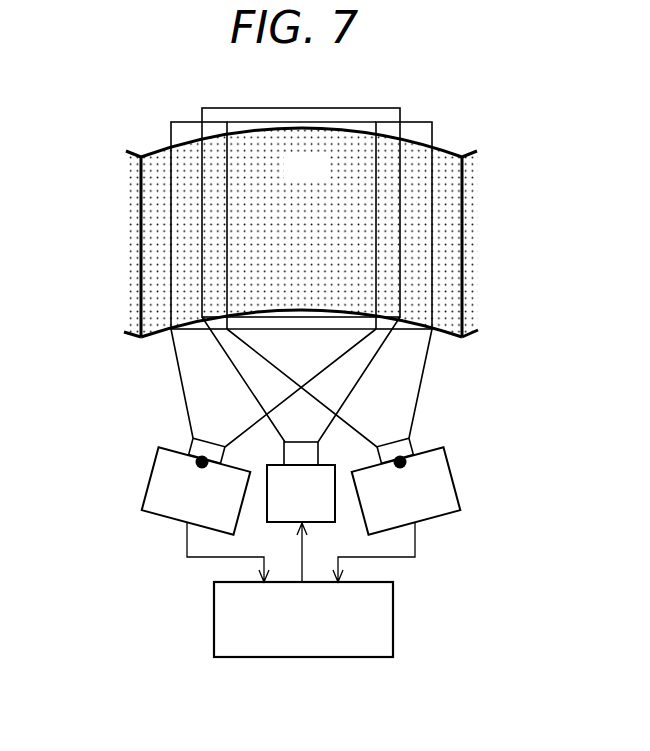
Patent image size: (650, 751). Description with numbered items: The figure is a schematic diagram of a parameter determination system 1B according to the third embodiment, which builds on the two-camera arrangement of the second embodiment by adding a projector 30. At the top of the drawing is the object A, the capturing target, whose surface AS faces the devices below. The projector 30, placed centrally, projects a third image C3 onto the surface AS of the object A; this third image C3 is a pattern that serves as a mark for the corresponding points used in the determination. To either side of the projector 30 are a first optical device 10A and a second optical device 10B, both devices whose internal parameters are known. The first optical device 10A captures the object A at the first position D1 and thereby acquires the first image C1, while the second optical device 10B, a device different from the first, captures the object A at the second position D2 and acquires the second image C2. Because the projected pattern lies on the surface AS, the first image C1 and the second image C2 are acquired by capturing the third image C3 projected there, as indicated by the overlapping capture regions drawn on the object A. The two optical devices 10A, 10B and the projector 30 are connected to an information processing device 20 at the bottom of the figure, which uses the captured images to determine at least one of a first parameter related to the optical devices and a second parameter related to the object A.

The object A is at (153, 150).
The surface of the object AS is at (325, 177).
The first image C1 is at (184, 121).
The second image C2 is at (418, 121).
The third image C3 is at (328, 108).
The parameter determination system 1B is at (98, 400).
The first optical device 10A is at (147, 482).
The second optical device 10B is at (455, 481).
The first position D1 is at (199, 457).
The second position D2 is at (404, 457).
The projector 30 is at (277, 524).
The information processing device 20 is at (214, 614).